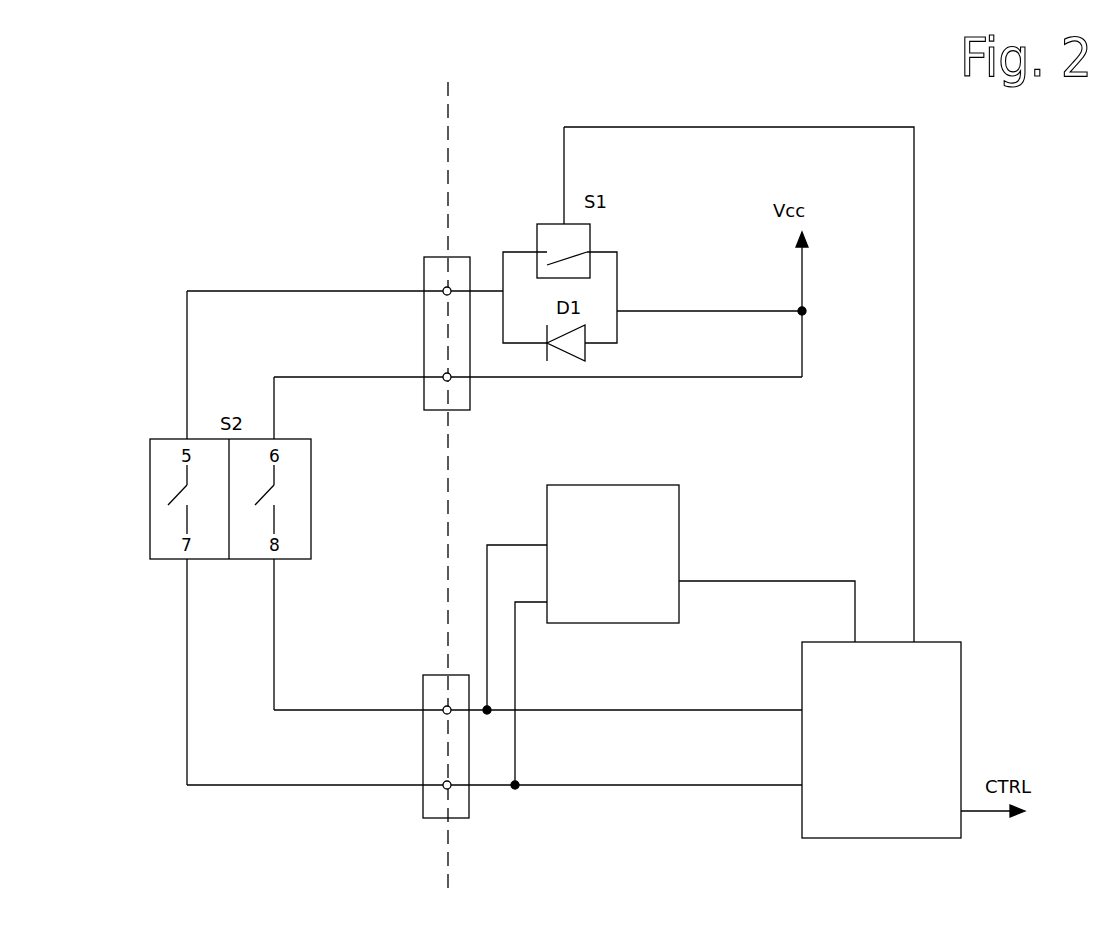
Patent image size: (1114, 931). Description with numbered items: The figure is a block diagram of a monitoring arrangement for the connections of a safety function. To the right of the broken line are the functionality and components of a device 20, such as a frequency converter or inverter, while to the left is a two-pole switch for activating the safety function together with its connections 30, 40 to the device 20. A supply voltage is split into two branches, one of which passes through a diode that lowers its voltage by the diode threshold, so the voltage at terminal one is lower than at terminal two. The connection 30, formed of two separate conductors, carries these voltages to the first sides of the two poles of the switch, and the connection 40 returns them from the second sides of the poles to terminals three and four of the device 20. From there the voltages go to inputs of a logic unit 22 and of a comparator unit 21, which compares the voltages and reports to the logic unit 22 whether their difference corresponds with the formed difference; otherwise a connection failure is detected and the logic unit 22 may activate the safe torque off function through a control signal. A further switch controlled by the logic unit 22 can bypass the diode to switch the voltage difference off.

The device 20 is at (488, 161).
The comparator unit 21 is at (679, 505).
The logic unit 22 is at (961, 672).
The connection 30 is at (349, 348).
The connection 40 is at (345, 758).